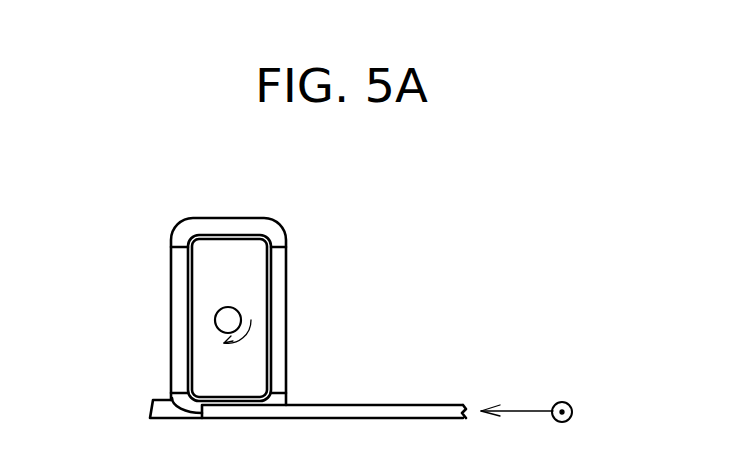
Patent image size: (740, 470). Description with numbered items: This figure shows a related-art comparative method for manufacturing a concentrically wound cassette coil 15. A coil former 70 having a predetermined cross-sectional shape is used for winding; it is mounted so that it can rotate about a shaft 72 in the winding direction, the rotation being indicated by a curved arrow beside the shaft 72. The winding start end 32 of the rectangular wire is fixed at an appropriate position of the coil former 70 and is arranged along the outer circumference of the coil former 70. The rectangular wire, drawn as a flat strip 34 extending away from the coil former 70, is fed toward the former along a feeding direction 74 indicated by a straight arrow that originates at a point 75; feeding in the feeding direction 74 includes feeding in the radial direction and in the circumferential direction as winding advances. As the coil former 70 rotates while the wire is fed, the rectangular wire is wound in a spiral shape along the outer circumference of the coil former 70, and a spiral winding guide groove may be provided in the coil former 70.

The cassette coil 15 is at (296, 255).
The coil former 70 is at (245, 297).
The shaft 72 is at (228, 320).
The winding start end 32 is at (152, 407).
The plate member 34 is at (422, 410).
The feeding direction 74 is at (524, 410).
The rotation axis 75 is at (568, 404).